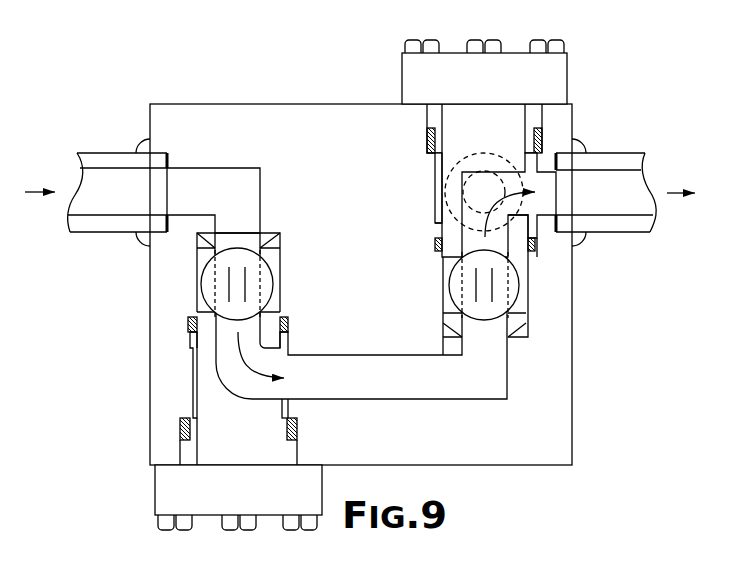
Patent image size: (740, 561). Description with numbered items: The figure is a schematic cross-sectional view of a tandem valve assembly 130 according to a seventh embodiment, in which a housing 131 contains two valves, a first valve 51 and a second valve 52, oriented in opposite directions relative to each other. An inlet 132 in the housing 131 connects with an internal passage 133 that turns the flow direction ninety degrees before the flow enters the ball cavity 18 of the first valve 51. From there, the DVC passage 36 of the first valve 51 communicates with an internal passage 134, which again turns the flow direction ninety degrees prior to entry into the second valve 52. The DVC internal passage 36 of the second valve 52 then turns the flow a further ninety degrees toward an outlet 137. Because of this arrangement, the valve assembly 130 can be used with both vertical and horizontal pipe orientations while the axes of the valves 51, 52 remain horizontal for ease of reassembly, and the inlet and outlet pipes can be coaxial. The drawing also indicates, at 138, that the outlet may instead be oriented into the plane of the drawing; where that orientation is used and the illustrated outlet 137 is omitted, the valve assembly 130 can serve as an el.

The tandem valve assembly 130 is at (100, 290).
The housing 131 is at (547, 365).
The inlet 132 is at (155, 156).
The internal passage 133 is at (193, 170).
The internal passage 134 is at (447, 395).
The outlet 137 is at (565, 215).
The outlet oriented into the plane of the drawing 138 is at (485, 152).
The valve ball receiving cavity 18 is at (197, 265).
The first valve 51 is at (193, 292).
The second valve 52 is at (530, 284).
The internal passage 36 is at (218, 381).